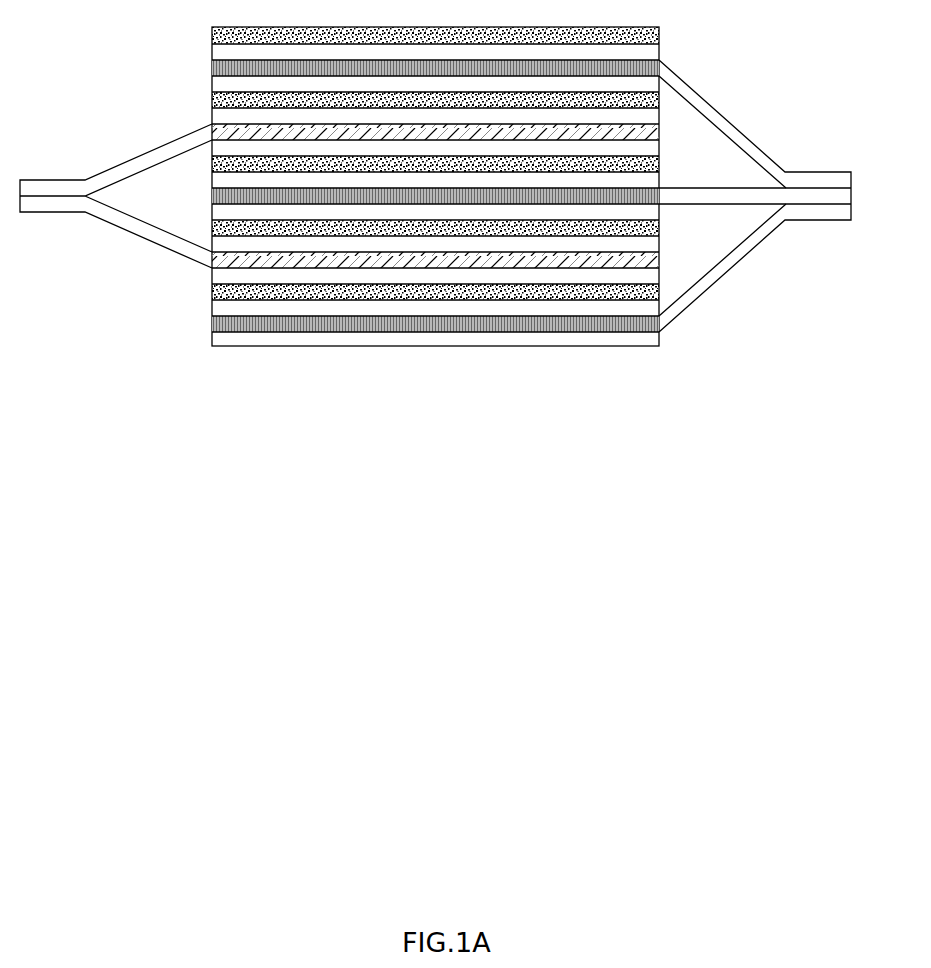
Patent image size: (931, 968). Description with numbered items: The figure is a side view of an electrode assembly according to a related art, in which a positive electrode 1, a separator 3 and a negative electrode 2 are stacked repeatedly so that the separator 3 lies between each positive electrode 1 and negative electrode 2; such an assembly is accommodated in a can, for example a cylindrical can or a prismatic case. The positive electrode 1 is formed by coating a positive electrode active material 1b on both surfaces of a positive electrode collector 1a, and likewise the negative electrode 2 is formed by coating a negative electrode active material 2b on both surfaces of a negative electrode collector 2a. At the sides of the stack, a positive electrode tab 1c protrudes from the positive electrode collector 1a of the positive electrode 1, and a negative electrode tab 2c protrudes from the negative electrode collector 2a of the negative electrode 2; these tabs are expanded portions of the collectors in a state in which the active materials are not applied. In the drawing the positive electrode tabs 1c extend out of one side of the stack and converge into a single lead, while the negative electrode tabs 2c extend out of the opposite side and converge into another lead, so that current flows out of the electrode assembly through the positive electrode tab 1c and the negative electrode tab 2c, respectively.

The positive electrode 1 is at (148, 52).
The positive electrode collector 1a is at (212, 68).
The positive electrode active material 1b is at (212, 50).
The positive electrode tab 1c is at (817, 172).
The negative electrode 2 is at (785, 124).
The negative electrode collector 2a is at (659, 132).
The negative electrode active material 2b is at (659, 147).
The negative electrode tab 2c is at (50, 180).
The separator 3 is at (212, 97).